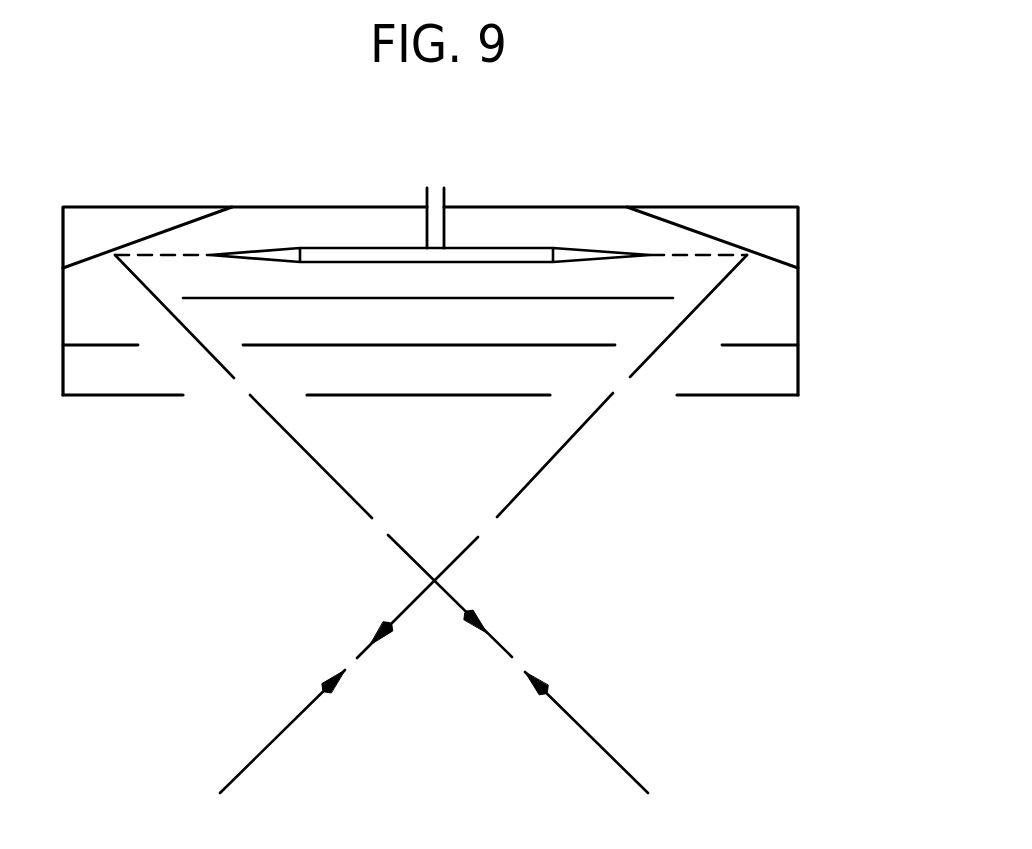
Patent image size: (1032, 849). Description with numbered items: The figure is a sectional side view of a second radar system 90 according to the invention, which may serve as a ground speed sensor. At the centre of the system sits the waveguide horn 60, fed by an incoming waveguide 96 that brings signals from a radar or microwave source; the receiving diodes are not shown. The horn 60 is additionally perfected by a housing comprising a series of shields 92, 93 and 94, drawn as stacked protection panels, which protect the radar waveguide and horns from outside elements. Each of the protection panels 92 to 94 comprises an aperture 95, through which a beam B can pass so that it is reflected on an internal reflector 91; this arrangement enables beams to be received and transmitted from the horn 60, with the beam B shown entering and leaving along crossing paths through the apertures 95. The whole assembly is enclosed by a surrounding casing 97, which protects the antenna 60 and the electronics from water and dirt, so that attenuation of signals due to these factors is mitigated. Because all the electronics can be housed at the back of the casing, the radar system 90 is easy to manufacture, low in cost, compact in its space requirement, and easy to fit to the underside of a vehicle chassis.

The waveguide horn 60 is at (278, 250).
The radar system 90 is at (565, 198).
The internal reflector 91 is at (706, 256).
The shield 92 is at (647, 296).
The shield 93 is at (763, 343).
The shield 94 is at (763, 390).
The aperture 95 is at (216, 397).
The incoming waveguide 96 is at (444, 188).
The surrounding casing 97 is at (131, 201).
The beam B is at (607, 750).